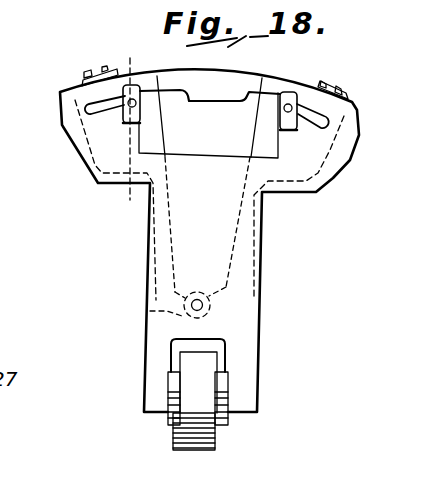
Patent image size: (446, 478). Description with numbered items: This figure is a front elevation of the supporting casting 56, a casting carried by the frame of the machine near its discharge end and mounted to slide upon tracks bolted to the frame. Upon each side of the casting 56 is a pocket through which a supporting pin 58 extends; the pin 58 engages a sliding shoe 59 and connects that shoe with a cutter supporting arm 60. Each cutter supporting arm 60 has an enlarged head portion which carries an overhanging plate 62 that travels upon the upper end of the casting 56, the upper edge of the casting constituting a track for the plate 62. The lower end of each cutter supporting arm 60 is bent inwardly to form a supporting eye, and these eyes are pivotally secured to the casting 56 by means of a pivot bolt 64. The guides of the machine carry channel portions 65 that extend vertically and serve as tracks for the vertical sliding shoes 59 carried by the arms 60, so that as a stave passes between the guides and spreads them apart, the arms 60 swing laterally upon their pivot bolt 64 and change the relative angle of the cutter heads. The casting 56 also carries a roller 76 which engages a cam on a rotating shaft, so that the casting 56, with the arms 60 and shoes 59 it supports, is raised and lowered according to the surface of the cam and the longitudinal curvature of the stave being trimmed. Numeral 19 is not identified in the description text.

The clamping bolt 19 is at (149, 57).
The supporting casting 56 is at (245, 350).
The supporting pin 58 is at (125, 98).
The sliding shoe 59 is at (125, 83).
The cutter supporting arm 60 is at (147, 242).
The overhanging plate 62 is at (90, 74).
The pivot bolt 64 is at (210, 302).
The channel portions 65 is at (134, 312).
The roller 76 is at (215, 430).